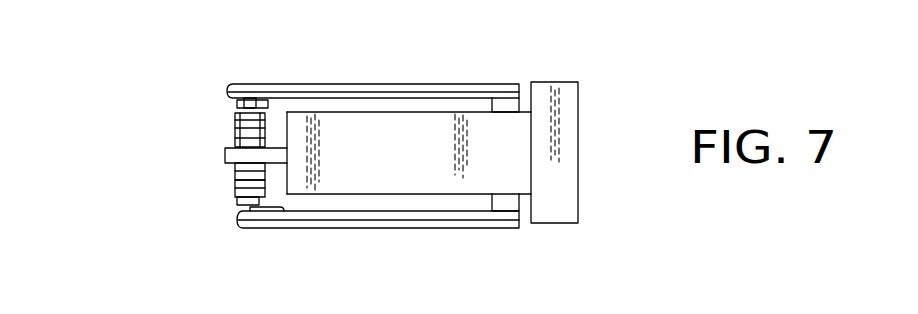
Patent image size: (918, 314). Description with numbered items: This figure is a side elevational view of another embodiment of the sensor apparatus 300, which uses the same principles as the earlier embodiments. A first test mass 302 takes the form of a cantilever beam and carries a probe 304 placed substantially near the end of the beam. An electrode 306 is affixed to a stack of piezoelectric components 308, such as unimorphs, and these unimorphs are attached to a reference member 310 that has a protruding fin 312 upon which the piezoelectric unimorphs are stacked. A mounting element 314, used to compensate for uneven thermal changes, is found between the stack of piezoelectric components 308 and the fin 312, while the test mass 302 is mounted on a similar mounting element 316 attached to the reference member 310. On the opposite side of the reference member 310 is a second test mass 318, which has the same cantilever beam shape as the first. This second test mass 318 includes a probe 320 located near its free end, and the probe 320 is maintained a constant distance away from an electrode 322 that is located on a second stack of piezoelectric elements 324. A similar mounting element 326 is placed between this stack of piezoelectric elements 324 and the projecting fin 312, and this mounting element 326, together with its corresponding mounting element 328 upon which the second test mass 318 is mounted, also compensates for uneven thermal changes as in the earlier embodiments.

The apparatus 300 is at (620, 75).
The first test mass 302 is at (412, 85).
The probe 304 is at (250, 102).
The electrode 306 is at (240, 105).
The stack of piezoelectric components 308 is at (300, 128).
The reference member 310 is at (572, 140).
The protruding fin 312 is at (225, 151).
The mounting element 314 is at (236, 132).
The mounting element 316 is at (508, 85).
The second test mass 318 is at (392, 228).
The probe 320 is at (280, 212).
The electrode 322 is at (238, 203).
The stack of piezoelectric elements 324 is at (233, 185).
The mounting element 326 is at (233, 172).
The mounting element 328 is at (503, 205).